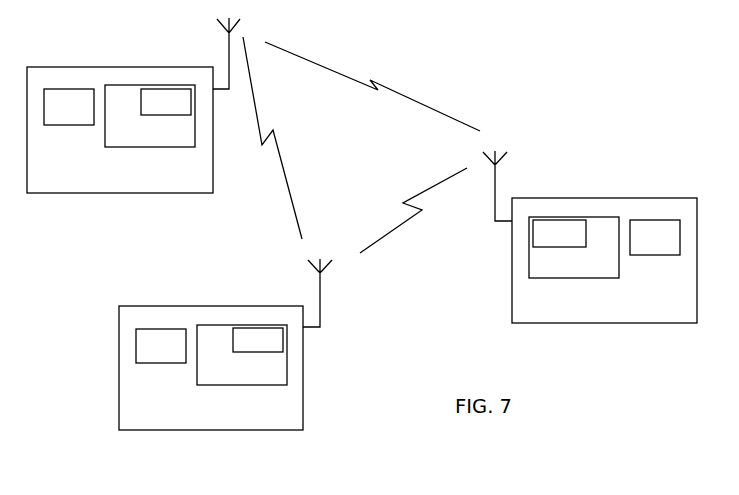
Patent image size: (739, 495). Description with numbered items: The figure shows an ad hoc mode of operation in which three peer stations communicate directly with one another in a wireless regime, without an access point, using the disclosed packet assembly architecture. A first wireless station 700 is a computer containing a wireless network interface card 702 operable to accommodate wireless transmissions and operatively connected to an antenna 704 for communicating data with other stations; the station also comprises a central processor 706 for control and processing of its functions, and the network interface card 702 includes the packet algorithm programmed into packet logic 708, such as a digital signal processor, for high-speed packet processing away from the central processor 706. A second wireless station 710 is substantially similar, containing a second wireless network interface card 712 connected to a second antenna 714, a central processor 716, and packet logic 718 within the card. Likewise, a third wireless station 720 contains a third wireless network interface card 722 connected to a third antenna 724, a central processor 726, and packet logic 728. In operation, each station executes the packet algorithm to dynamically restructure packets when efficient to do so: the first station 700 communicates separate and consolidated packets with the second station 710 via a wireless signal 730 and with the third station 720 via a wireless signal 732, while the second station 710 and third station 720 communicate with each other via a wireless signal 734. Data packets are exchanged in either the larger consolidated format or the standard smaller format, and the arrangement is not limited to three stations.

The first wireless station 700 is at (603, 198).
The wireless network interface card 702 is at (609, 268).
The antenna 704 is at (498, 223).
The central processor 706 is at (670, 248).
The packet logic 708 is at (575, 240).
The second wireless station 710 is at (117, 67).
The second wireless network interface card 712 is at (145, 140).
The second antenna 714 is at (218, 90).
The central processor 716 is at (88, 119).
The packet logic 718 is at (182, 110).
The third wireless station 720 is at (210, 306).
The third wireless network interface card 722 is at (240, 378).
The third antenna 724 is at (312, 328).
The central processor 726 is at (179, 356).
The packet logic 728 is at (272, 348).
The wireless signal 730 is at (342, 78).
The wireless signal 732 is at (407, 218).
The wireless signal 734 is at (282, 160).